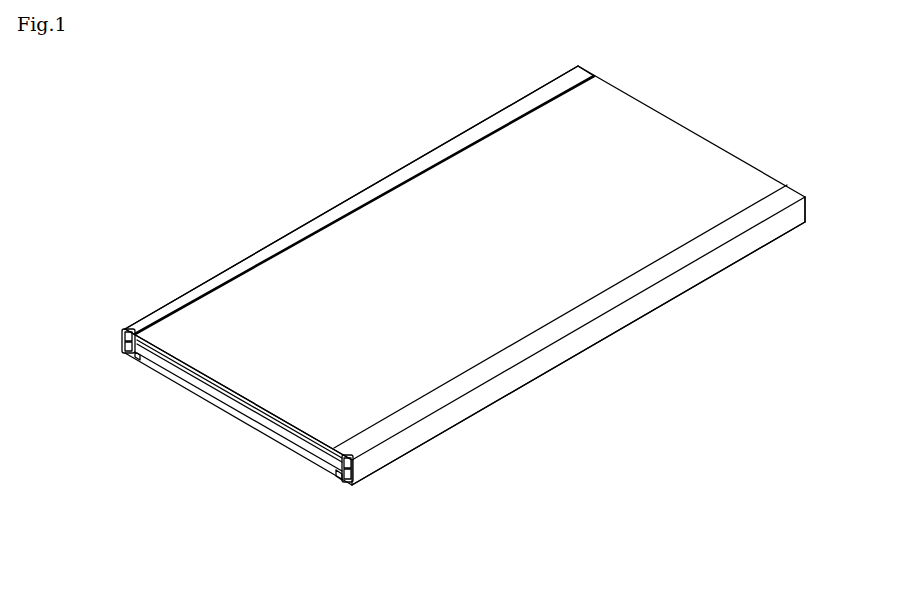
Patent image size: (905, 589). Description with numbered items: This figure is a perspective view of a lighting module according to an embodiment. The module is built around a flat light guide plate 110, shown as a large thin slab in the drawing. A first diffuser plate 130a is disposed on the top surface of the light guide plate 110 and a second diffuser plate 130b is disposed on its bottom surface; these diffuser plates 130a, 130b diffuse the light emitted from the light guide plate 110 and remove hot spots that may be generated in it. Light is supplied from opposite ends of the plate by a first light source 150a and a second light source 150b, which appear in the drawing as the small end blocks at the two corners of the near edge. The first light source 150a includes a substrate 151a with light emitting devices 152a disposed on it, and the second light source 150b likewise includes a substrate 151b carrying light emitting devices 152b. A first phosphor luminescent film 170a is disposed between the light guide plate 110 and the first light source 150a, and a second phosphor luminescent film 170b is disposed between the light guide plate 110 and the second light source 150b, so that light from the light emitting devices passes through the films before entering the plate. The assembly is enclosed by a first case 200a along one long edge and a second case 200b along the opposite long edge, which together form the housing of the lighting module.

The light guide plate 110 is at (276, 430).
The first diffuser plate 130a is at (200, 393).
The second diffuser plate 130b is at (178, 367).
The first light source 150a is at (338, 512).
The substrate 151a is at (347, 485).
The light emitting device 152a is at (323, 512).
The first phosphor luminescent film 170a is at (332, 477).
The second light source 150b is at (82, 369).
The substrate 151b is at (125, 352).
The light emitting device 152b is at (133, 355).
The second phosphor luminescent film 170b is at (136, 358).
The first case 200a is at (583, 320).
The second case 200b is at (395, 187).